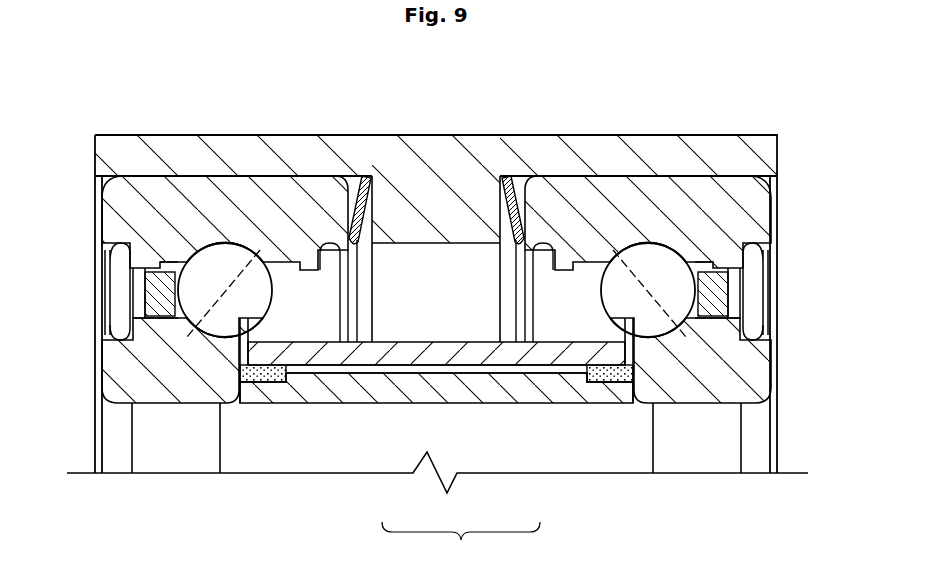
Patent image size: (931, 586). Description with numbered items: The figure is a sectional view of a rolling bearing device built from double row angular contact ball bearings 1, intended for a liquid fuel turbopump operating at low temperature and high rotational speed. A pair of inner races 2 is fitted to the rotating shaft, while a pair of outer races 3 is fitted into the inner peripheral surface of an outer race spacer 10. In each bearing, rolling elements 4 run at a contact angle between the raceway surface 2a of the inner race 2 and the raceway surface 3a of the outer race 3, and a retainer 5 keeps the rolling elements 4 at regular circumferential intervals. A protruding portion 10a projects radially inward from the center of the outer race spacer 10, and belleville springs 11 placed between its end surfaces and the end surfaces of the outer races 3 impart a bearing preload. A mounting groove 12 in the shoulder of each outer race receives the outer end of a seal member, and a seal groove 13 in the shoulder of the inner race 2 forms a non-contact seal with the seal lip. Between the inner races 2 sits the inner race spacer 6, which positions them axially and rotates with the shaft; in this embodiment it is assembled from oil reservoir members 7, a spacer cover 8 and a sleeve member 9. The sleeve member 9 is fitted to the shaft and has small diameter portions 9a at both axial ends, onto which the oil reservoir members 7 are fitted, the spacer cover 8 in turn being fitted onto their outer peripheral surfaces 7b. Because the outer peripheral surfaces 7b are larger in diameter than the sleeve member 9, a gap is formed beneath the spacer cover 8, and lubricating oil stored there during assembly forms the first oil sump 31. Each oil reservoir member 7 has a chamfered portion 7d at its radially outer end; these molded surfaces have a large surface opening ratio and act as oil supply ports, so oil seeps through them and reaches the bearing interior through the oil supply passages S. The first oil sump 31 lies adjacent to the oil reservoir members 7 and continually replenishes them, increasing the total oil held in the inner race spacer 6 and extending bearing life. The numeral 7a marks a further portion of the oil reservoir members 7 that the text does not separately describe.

The angular contact ball bearing 1 is at (102, 197).
The inner race 2 is at (128, 371).
The raceway surface of the inner race 2a is at (207, 327).
The outer race 3 is at (122, 218).
The raceway surface of the outer race 3a is at (238, 252).
The rolling element 4 is at (205, 258).
The retainer 5 is at (156, 288).
The inner race spacer 6 is at (461, 543).
The oil reservoir member 7 is at (256, 355).
The flange lower portion 7a is at (258, 352).
The outer peripheral surface of the oil reservoir member 7b is at (265, 346).
The chamfered portion 7d is at (236, 340).
The spacer cover 8 is at (482, 395).
The sleeve member 9 is at (428, 395).
The small diameter portion 9a is at (603, 337).
The outer race spacer 10 is at (410, 150).
The protruding portion 10a is at (447, 222).
The belleville spring 11 is at (350, 233).
The mounting groove 12 is at (110, 263).
The seal groove 13 is at (112, 328).
The first oil sump 31 is at (444, 342).
The oil supply passage S is at (268, 383).